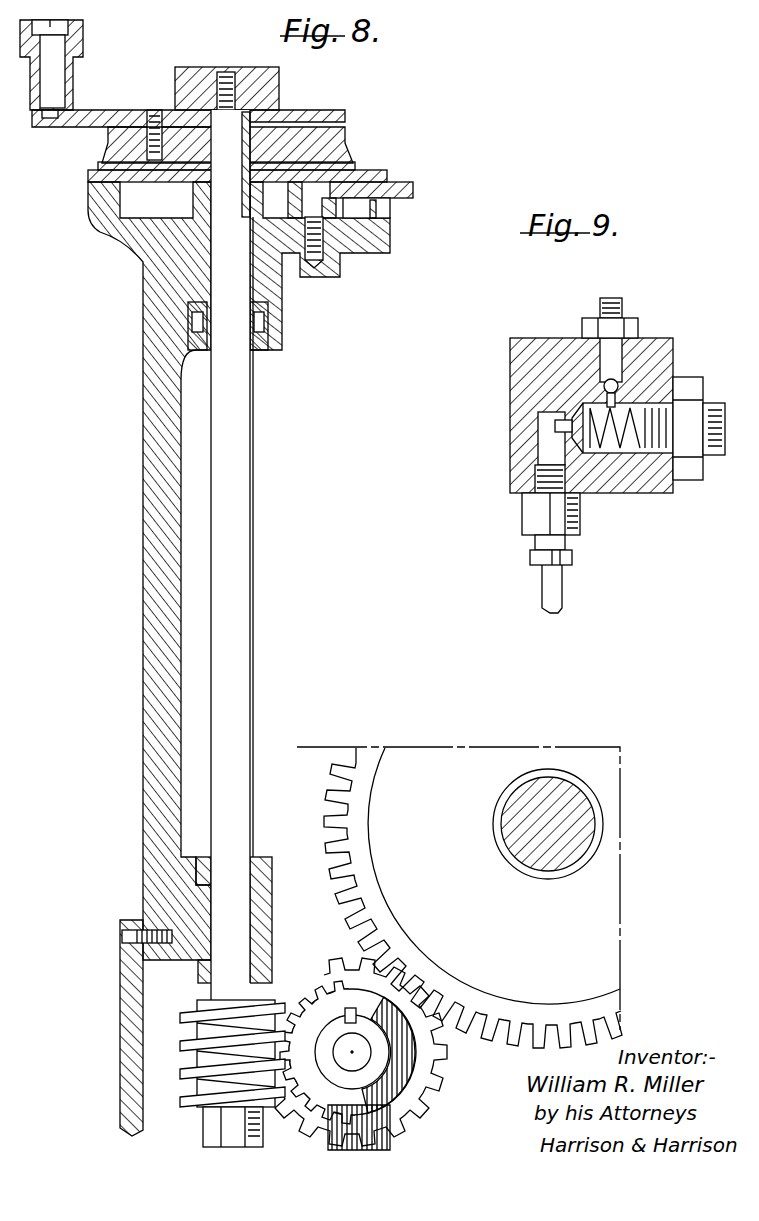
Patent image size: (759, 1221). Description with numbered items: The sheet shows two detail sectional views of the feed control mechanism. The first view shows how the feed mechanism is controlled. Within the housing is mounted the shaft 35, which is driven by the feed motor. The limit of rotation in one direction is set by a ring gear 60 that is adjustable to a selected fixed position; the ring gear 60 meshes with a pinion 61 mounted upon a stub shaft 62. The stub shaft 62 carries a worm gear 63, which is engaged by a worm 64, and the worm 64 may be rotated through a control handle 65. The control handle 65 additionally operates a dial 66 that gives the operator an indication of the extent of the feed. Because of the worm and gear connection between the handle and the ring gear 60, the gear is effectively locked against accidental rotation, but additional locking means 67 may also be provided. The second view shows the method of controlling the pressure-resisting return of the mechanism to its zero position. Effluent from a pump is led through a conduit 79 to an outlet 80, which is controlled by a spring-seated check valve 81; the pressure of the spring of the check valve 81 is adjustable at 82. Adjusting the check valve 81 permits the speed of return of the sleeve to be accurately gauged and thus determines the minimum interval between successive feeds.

In FIG. 8, the shaft 35 is at (525, 800).
In FIG. 8, the ring gear 60 is at (338, 828).
In FIG. 8, the pinion 61 is at (385, 1006).
In FIG. 8, the stub shaft 62 is at (355, 1057).
In FIG. 8, the worm gear 63 is at (318, 1010).
In FIG. 8, the worm 64 is at (190, 1018).
In FIG. 8, the control handle 65 is at (86, 116).
In FIG. 8, the dial 66 is at (400, 182).
In FIG. 8, the locking means 67 is at (256, 76).
In FIG. 9, the conduit 79 is at (544, 590).
In FIG. 9, the outlet 80 is at (660, 355).
In FIG. 9, the check valve 81 is at (578, 440).
In FIG. 9, the spring pressure adjustment 82 is at (690, 420).